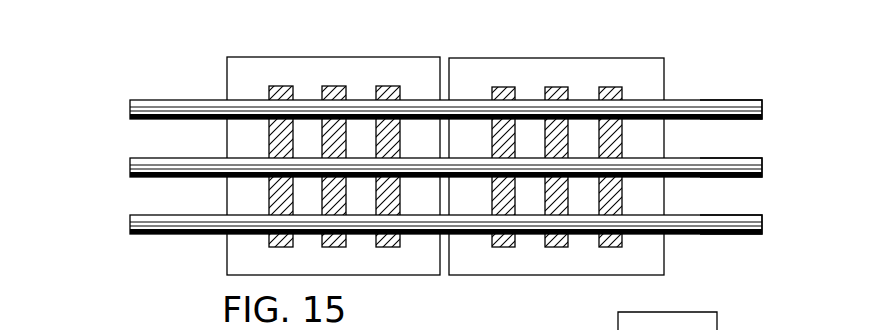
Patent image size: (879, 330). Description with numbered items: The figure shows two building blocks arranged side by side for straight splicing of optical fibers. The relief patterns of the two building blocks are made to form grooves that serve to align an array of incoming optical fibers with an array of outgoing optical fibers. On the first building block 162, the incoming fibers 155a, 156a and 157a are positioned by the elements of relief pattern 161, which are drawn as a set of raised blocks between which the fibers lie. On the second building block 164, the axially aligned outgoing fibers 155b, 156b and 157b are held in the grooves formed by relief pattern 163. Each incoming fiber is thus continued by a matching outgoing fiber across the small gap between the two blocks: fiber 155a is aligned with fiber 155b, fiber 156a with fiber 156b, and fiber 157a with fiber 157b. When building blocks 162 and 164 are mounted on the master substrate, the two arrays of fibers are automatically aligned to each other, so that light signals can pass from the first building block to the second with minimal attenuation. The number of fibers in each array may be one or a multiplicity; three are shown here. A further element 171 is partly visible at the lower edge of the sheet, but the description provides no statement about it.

The optical fiber 155a is at (130, 99).
The optical fiber 155b is at (752, 95).
The optical fiber 156a is at (130, 157).
The optical fiber 156b is at (752, 153).
The optical fiber 157a is at (130, 214).
The optical fiber 157b is at (752, 215).
The relief pattern 161 is at (300, 72).
The building block 162 is at (252, 60).
The relief pattern 163 is at (645, 64).
The building block 164 is at (557, 58).
The lower housing element 171 is at (708, 310).